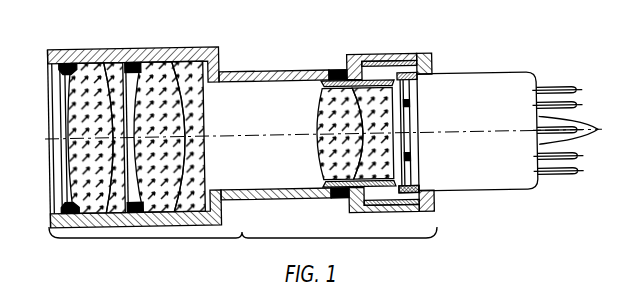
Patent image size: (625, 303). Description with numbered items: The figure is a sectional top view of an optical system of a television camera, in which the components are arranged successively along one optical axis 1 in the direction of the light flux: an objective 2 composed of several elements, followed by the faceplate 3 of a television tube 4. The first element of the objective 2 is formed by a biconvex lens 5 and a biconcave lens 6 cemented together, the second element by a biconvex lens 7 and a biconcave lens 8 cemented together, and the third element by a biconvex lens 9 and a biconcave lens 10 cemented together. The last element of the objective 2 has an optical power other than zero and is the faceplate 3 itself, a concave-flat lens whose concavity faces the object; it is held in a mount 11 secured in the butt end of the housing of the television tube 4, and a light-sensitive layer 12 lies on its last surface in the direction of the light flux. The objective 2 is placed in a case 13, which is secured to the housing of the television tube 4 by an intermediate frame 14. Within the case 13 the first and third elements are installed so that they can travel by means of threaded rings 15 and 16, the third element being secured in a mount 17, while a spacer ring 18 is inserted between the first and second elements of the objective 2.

The optical axis 1 is at (275, 135).
The objective 2 is at (243, 250).
The faceplate 3 is at (415, 113).
The television tube 4 is at (507, 115).
The biconvex lens 5 is at (90, 115).
The biconcave lens 6 is at (118, 113).
The biconvex lens 7 is at (159, 114).
The biconcave lens 8 is at (192, 113).
The biconvex lens 9 is at (347, 134).
The biconcave lens 10 is at (382, 113).
The mount 11 is at (425, 131).
The light-sensitive layer 12 is at (435, 200).
The case 13 is at (120, 137).
The intermediate frame 14 is at (390, 110).
The threaded ring 15 is at (50, 138).
The threaded ring 16 is at (334, 207).
The mount 17 is at (330, 57).
The spacer ring 18 is at (82, 138).